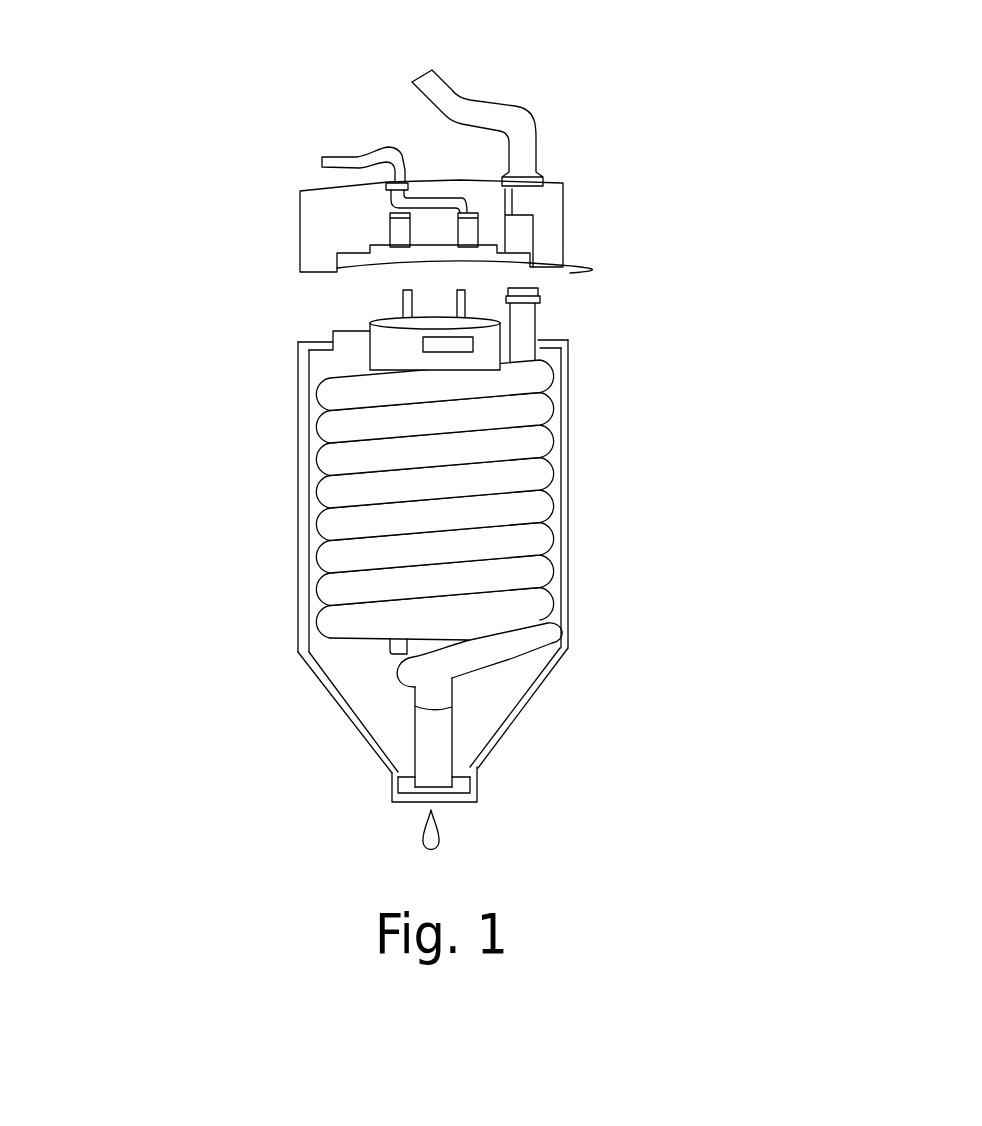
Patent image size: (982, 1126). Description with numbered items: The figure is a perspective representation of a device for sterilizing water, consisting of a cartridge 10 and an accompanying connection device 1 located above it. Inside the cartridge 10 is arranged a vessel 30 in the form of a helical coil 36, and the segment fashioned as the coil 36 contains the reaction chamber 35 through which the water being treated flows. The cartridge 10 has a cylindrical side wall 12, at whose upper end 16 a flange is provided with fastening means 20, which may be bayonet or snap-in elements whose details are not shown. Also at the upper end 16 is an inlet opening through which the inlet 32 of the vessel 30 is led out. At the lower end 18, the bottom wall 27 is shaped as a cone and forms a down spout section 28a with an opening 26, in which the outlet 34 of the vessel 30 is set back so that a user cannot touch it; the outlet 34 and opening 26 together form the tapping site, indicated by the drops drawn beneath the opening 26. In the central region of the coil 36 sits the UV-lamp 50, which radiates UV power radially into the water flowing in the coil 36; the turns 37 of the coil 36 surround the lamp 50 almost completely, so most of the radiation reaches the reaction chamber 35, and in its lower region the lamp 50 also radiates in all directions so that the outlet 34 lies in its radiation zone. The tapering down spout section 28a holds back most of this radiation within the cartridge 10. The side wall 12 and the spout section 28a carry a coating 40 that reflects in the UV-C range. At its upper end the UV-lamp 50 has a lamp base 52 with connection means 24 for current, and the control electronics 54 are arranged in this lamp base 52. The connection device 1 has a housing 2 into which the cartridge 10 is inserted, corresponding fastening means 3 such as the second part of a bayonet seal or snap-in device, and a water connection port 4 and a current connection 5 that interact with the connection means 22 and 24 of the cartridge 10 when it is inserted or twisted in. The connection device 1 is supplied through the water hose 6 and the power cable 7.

The connection device 1 is at (619, 140).
The housing 2 is at (557, 205).
The fastening means 3 is at (570, 273).
The water connection port 4 is at (520, 205).
The current connection 5 is at (398, 230).
The water hose 6 is at (495, 117).
The power cable 7 is at (368, 157).
The cartridge 10 is at (599, 467).
The cylindrical side wall 12 is at (586, 567).
The upper end 16 is at (259, 347).
The lower end 18 is at (586, 697).
The fastening means 20 is at (330, 340).
The connection means 22 is at (510, 313).
The connection means for current 24 is at (403, 291).
The opening 26 is at (397, 817).
The bottom wall 27 is at (517, 721).
The down spout section 28a is at (392, 788).
The vessel 30 is at (316, 437).
The inlet 32 is at (538, 292).
The outlet 34 is at (442, 767).
The reaction chamber 35 is at (327, 597).
The helical coil 36 is at (547, 503).
The turns 37 is at (337, 488).
The coating 40 is at (307, 553).
The UV-lamp 50 is at (405, 643).
The lamp base 52 is at (390, 337).
The control electronics 54 is at (480, 345).